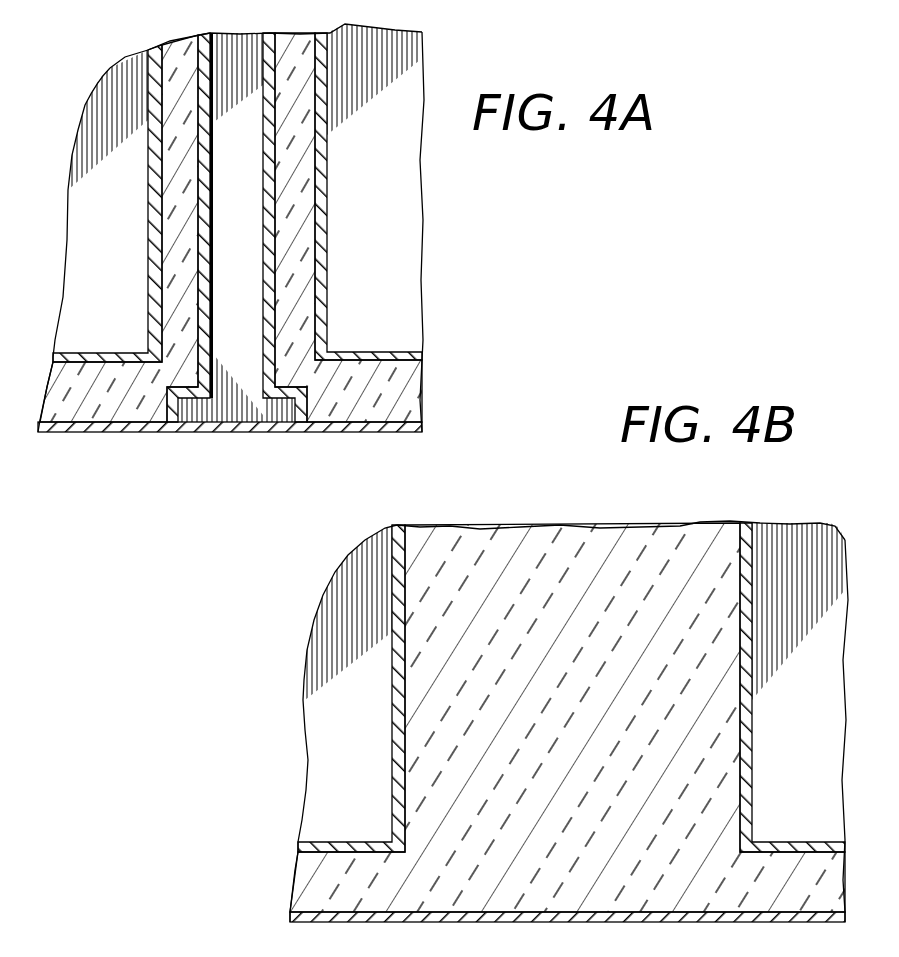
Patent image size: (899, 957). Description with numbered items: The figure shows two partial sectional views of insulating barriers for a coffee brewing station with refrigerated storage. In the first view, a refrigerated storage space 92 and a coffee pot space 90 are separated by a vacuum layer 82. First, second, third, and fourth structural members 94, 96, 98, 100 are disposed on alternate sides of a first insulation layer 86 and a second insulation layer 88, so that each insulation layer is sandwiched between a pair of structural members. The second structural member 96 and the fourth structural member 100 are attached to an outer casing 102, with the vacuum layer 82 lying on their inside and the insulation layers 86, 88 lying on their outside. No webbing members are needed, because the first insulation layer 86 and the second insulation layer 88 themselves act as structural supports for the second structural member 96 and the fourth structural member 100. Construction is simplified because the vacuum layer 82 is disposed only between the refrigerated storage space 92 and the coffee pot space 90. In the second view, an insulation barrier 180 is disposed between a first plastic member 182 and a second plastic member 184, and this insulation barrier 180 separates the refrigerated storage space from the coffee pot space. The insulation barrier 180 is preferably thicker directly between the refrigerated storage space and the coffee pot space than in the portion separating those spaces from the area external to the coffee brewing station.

In FIG. 4A, the vacuum layer 82 is at (252, 167).
In FIG. 4A, the first insulation layer 86 is at (177, 233).
In FIG. 4A, the second insulation layer 88 is at (300, 295).
In FIG. 4A, the coffee pot space 90 is at (402, 167).
In FIG. 4A, the refrigerated storage space 92 is at (118, 314).
In FIG. 4A, the first structural member 94 is at (152, 196).
In FIG. 4A, the second structural member 96 is at (237, 235).
In FIG. 4A, the third structural member 98 is at (265, 323).
In FIG. 4A, the fourth structural member 100 is at (328, 233).
In FIG. 4A, the outer casing 102 is at (136, 436).
In FIG. 4B, the insulation barrier 180 is at (584, 700).
In FIG. 4B, the first plastic member 182 is at (752, 722).
In FIG. 4B, the second plastic member 184 is at (393, 716).